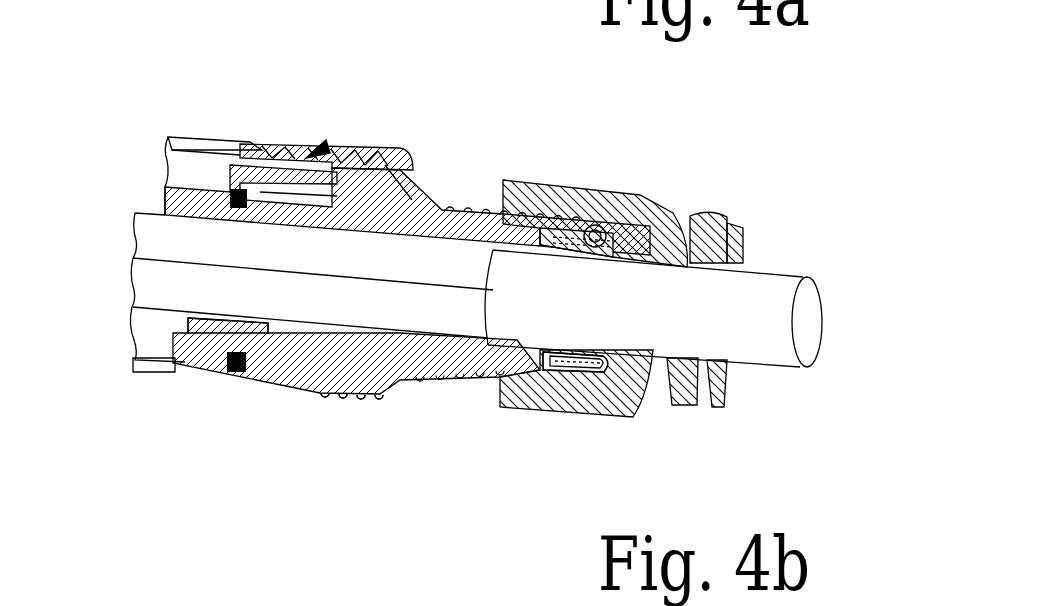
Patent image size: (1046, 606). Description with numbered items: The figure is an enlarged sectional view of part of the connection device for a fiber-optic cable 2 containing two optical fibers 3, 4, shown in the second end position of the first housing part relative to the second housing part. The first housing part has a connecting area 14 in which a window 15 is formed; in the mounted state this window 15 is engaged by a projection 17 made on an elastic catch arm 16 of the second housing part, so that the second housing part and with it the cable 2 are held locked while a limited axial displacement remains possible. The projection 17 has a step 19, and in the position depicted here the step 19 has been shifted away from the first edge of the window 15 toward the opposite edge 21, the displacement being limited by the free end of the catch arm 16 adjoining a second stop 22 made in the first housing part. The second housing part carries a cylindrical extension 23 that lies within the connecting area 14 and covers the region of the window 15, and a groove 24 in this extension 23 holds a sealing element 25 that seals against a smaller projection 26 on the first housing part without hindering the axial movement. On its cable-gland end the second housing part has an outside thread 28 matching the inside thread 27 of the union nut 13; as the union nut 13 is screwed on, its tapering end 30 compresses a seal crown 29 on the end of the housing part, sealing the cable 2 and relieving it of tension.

The fiber-optic cable 2 is at (753, 323).
The optical fiber 3 is at (163, 228).
The optical fiber 4 is at (160, 282).
The union nut 13 is at (612, 390).
The connecting area 14 is at (354, 408).
The window 15 is at (340, 145).
The catch arm 16 is at (380, 163).
The projection 17 is at (277, 145).
The step 19 is at (318, 142).
The opposite edge 21 is at (247, 186).
The second stop 22 is at (223, 178).
The cylindrical extension 23 is at (310, 382).
The groove 24 is at (267, 320).
The sealing element 25 is at (222, 368).
The smaller projection 26 is at (250, 144).
The inside thread 27 is at (540, 410).
The outside thread 28 is at (458, 372).
The seal crown 29 is at (597, 237).
The tapering end 30 is at (643, 192).